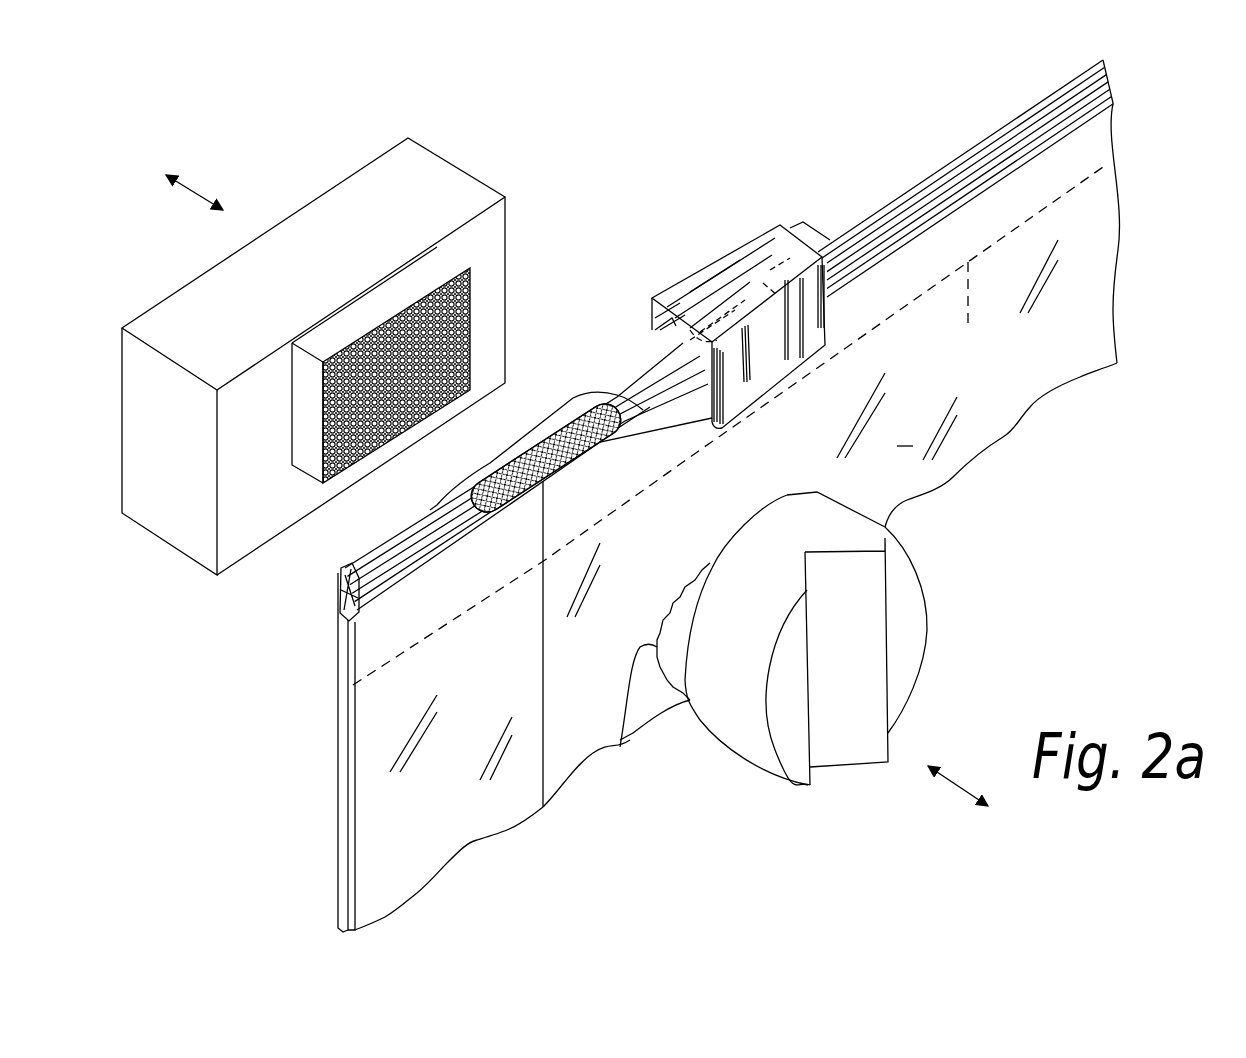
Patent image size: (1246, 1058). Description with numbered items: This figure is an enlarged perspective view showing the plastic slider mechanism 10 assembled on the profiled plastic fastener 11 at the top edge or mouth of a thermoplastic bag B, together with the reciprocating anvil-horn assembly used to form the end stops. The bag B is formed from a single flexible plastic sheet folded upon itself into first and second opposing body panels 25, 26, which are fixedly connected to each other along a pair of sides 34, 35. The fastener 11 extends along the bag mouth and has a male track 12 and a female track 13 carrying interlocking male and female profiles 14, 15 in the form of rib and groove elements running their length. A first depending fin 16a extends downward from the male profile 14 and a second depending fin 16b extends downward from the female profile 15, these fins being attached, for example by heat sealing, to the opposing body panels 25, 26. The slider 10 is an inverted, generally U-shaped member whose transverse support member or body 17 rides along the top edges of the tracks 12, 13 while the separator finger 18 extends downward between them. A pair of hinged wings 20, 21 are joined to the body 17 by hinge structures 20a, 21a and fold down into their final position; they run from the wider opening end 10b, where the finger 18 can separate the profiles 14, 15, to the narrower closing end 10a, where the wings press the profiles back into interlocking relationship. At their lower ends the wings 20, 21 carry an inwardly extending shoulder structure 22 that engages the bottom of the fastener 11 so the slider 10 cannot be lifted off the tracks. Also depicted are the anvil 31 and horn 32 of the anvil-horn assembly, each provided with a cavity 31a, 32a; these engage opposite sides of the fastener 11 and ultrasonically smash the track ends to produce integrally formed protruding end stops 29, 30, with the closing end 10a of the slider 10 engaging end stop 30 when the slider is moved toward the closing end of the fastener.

The plastic slider mechanism 10 is at (672, 270).
The closing end 10a is at (657, 327).
The opening end 10b is at (789, 220).
The profiled plastic fastener 11 is at (912, 163).
The male track 12 is at (643, 363).
The female track 13 is at (650, 420).
The male profile 14 is at (340, 602).
The female profile 15 is at (357, 620).
The first depending fin 16a is at (1107, 163).
The second depending fin 16b is at (283, 710).
The transverse support member or body 17 is at (698, 282).
The separator finger 18 is at (703, 313).
The wing 20 is at (752, 401).
The hinge structure 20a is at (727, 342).
The wing 21 is at (670, 320).
The hinge structure 21a is at (667, 300).
The shoulder structure 22 is at (700, 433).
The first body panel 25 is at (1123, 287).
The second body panel 26 is at (1103, 365).
The end stop 29 is at (473, 481).
The end stop 30 is at (578, 402).
The anvil 31 is at (445, 172).
The anvil cavity 31a is at (475, 284).
The horn 32 is at (917, 633).
The anvil cavity 32a is at (640, 733).
The side 34 is at (592, 748).
The side 35 is at (505, 803).
The thermoplastic bag B is at (724, 523).